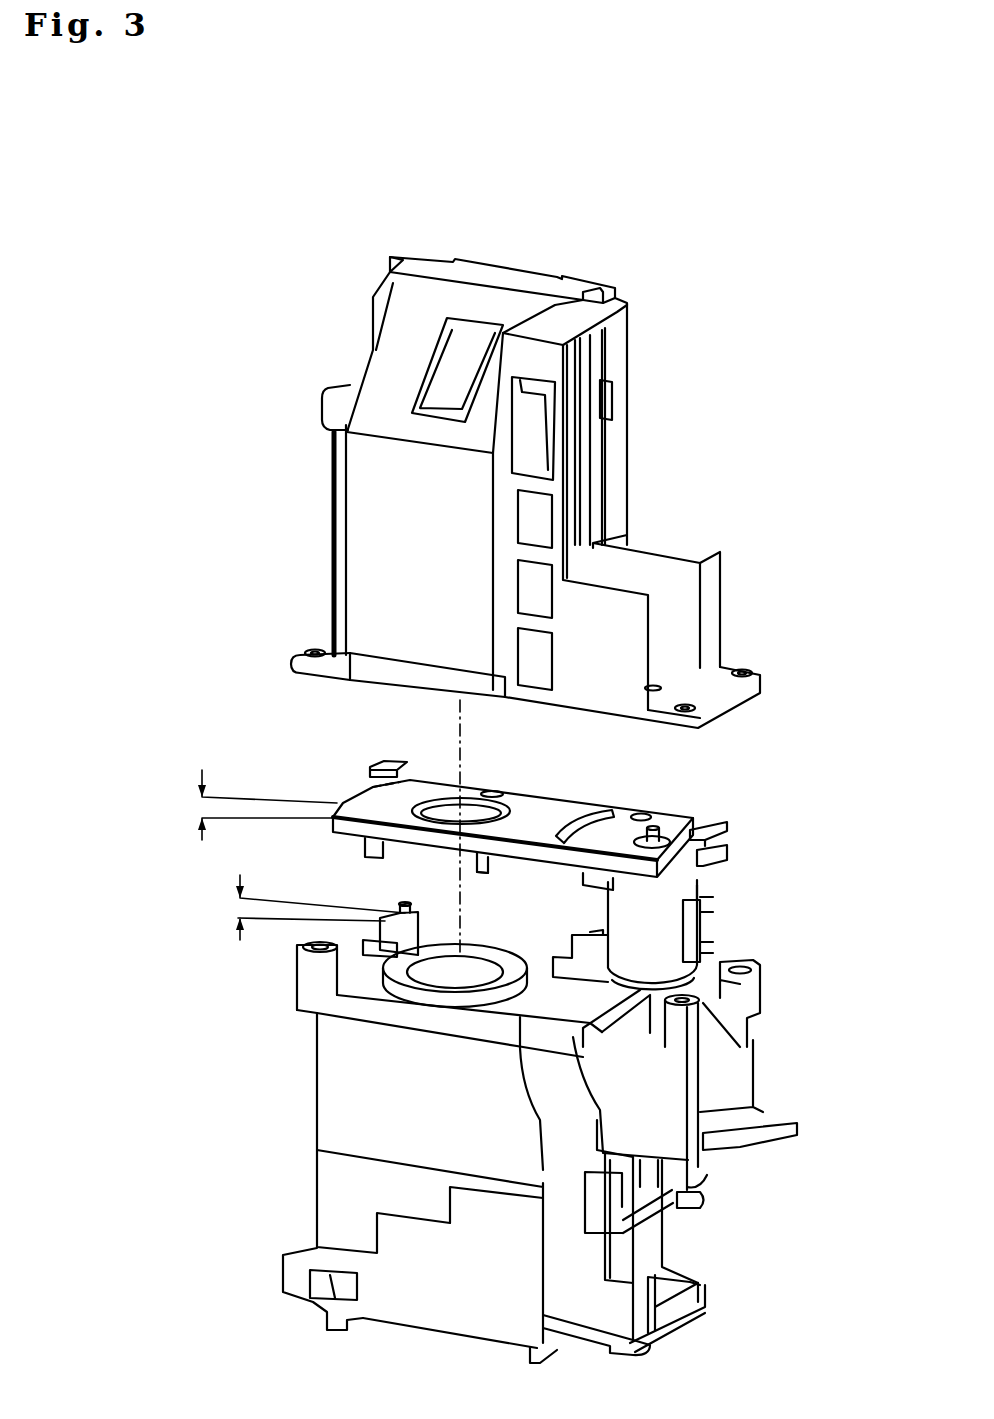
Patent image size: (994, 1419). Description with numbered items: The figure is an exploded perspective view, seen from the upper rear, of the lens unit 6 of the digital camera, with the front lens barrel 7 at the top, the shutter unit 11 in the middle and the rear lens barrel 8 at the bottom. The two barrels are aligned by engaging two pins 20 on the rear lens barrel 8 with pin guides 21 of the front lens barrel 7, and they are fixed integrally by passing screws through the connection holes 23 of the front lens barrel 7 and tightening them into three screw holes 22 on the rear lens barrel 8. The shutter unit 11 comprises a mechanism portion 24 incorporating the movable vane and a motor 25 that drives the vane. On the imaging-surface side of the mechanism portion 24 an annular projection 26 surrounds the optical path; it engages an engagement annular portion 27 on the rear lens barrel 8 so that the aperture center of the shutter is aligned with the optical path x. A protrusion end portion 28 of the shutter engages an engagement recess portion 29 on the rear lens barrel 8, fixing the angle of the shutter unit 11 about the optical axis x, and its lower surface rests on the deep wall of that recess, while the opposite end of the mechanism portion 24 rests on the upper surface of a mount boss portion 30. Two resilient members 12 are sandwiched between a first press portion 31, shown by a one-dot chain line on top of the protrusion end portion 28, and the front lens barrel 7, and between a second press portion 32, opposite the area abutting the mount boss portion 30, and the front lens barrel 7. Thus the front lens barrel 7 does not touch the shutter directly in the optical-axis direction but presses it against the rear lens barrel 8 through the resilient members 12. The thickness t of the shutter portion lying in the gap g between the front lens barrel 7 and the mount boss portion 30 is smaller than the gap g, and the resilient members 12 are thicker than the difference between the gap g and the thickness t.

The lens unit 6 is at (305, 333).
The front lens barrel 7 is at (382, 497).
The rear lens barrel 8 is at (382, 1088).
The shutter unit 11 is at (335, 800).
The resilient members 12 is at (387, 758).
The pins 20 is at (403, 903).
The pin guides 21 is at (757, 703).
The screw holes 22 is at (300, 940).
The connection holes 23 is at (318, 648).
The mechanism portion 24 is at (558, 820).
The motor 25 is at (707, 927).
The annular projection 26 is at (487, 860).
The engagement annular portion 27 is at (470, 958).
The protrusion end portion 28 is at (747, 853).
The engagement recess portion 29 is at (750, 993).
The mount boss portion 30 is at (410, 907).
The first press portion 31 is at (730, 842).
The second press portion 32 is at (367, 778).
The thickness t is at (256, 805).
The gap g is at (309, 907).
The optical path (optical axis) x is at (465, 767).